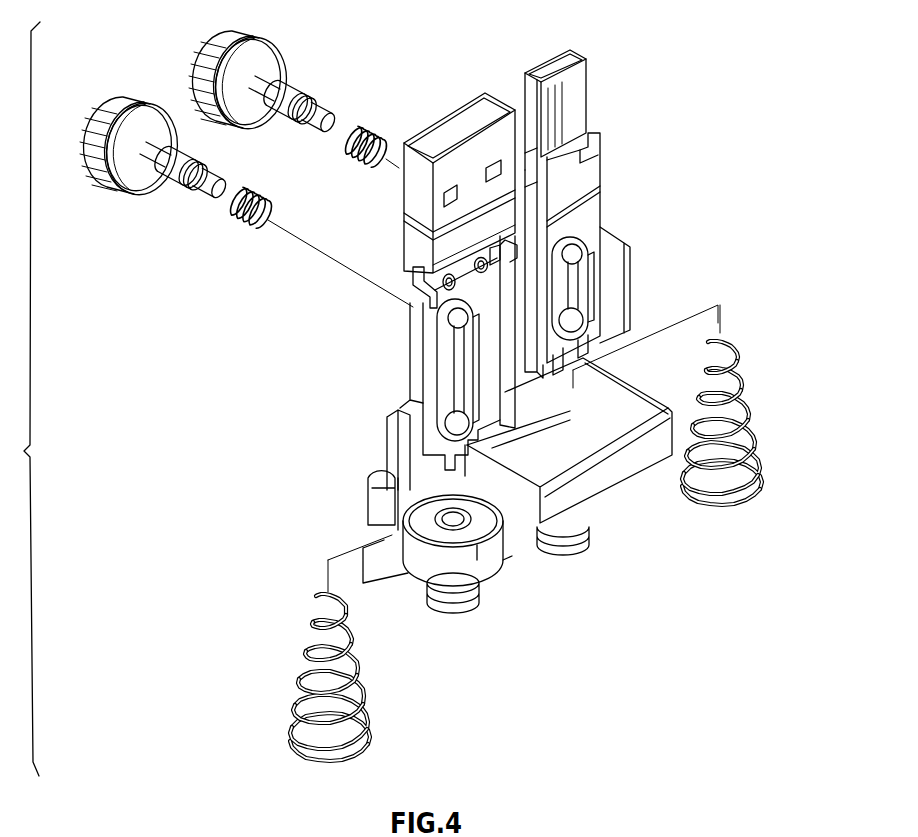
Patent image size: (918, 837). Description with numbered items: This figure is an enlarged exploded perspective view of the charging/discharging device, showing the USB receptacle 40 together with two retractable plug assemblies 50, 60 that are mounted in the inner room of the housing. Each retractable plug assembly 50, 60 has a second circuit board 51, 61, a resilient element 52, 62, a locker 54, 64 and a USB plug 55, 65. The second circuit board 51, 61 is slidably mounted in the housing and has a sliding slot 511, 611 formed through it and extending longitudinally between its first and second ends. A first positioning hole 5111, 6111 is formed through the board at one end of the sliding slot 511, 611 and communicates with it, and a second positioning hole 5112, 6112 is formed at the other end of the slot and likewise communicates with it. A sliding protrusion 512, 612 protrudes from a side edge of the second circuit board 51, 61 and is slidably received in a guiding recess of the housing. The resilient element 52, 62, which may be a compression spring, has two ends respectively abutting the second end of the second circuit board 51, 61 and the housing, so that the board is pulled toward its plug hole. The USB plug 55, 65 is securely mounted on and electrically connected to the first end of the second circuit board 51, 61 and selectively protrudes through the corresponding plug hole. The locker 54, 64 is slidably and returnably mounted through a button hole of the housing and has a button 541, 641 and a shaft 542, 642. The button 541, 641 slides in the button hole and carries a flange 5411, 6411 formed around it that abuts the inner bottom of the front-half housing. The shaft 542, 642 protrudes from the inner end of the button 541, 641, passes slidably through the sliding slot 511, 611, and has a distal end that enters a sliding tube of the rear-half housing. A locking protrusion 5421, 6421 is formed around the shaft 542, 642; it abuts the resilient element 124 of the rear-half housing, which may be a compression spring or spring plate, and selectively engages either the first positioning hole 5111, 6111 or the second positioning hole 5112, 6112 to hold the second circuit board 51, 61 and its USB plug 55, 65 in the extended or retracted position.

The USB receptacle 40 is at (610, 395).
The retractable plug assembly 50 is at (360, 379).
The second circuit board 51 is at (477, 282).
The sliding slot 511 is at (452, 360).
The first positioning hole 5111 is at (455, 320).
The second positioning hole 5112 is at (456, 423).
The sliding protrusion 512 is at (412, 435).
The resilient element 52 is at (350, 655).
The locker 54 is at (166, 201).
The button 541 is at (103, 117).
The flange 5411 is at (162, 103).
The shaft 542 is at (157, 157).
The locking protrusion 5421 is at (183, 190).
The USB plug 55 is at (470, 97).
The retractable plug assembly 60 is at (628, 169).
The second circuit board 61 is at (592, 173).
The sliding slot 611 is at (575, 293).
The first positioning hole 6111 is at (578, 252).
The second positioning hole 6112 is at (574, 330).
The sliding protrusion 612 is at (610, 248).
The resilient element 62 is at (740, 363).
The locker 64 is at (318, 44).
The button 641 is at (238, 37).
The flange 6411 is at (217, 47).
The shaft 642 is at (262, 88).
The locking protrusion 6421 is at (292, 100).
The USB plug 65 is at (563, 50).
The resilient element 124 is at (348, 160).